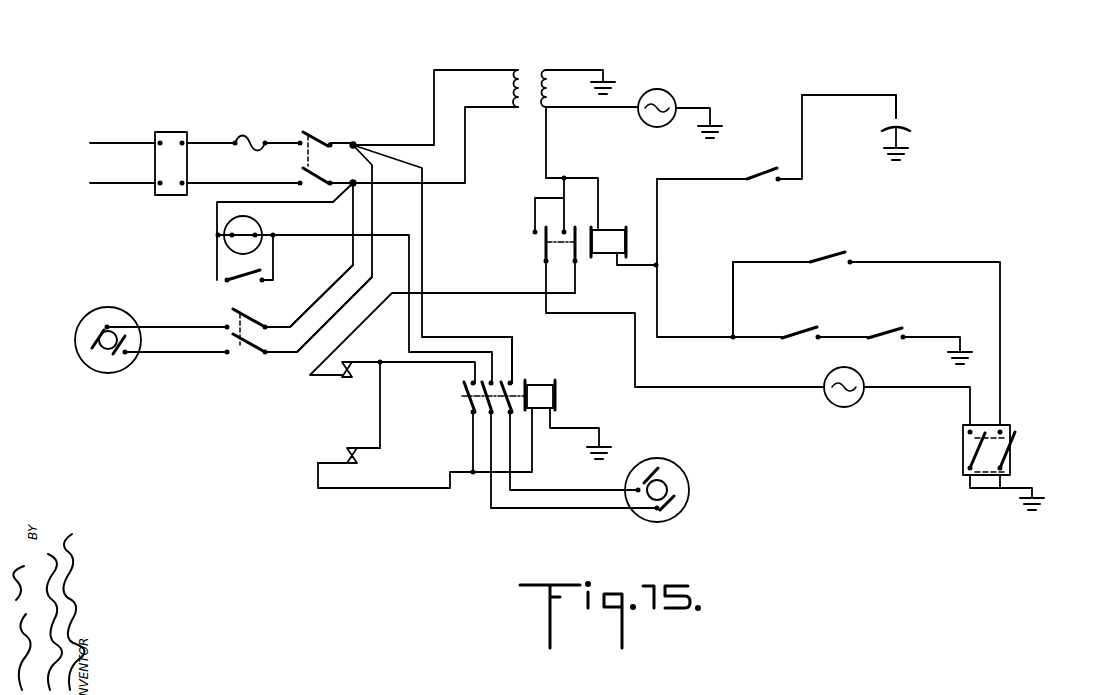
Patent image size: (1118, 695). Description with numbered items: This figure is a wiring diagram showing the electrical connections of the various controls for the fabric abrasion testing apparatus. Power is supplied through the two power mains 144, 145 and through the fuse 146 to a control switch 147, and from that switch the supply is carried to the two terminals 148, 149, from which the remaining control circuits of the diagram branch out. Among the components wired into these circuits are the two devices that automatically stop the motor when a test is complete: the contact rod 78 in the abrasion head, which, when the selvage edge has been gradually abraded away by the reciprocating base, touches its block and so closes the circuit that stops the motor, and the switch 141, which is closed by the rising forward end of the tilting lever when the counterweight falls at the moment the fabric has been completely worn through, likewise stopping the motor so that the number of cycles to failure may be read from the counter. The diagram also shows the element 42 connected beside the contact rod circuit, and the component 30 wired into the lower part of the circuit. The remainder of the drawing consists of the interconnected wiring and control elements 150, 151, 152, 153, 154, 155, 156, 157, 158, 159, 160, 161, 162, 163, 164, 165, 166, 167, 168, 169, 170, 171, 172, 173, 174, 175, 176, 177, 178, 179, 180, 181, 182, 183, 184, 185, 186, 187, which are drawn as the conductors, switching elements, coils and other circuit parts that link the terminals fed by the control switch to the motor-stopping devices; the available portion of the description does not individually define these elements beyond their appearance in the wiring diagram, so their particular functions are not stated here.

The motor 30 is at (692, 484).
The capacitor 42 is at (908, 136).
The contact rod 78 is at (896, 100).
The switch 141 is at (800, 322).
The power main 144 is at (204, 142).
The power main 145 is at (177, 196).
The fuse 146 is at (260, 141).
The control switch 147 is at (311, 128).
The terminal 148 is at (355, 142).
The terminal 149 is at (356, 186).
The conductors 150 is at (324, 294).
The conductor 151 is at (280, 354).
The double pole switch 152 is at (236, 358).
The motor 153 is at (116, 318).
The conductor 154 is at (411, 160).
The conductor 155 is at (512, 372).
The relay coil 156 is at (556, 394).
The conductor 157 is at (299, 234).
The relay contacts 158 is at (472, 414).
The switch 159 is at (246, 282).
The conductor 160 is at (267, 180).
The motor 161 is at (220, 212).
The conductor 162 is at (452, 70).
The conductor 163 is at (472, 124).
The transformer primary 164 is at (518, 68).
The transformer secondary 165 is at (550, 68).
The ground 166 is at (610, 80).
The conductor 167 is at (600, 110).
The lamp 168 is at (670, 96).
The conductor 169 is at (548, 150).
The relay coil 170 is at (606, 224).
The conductor 171 is at (640, 264).
The conductor 172 is at (678, 178).
The switch 173 is at (768, 172).
The relay contacts 174 is at (576, 262).
The conductor 175 is at (450, 292).
The connector 176 is at (344, 380).
The conductor 177 is at (380, 422).
The connector 178 is at (338, 458).
The conductor 179 is at (367, 490).
The relay contact 180 is at (466, 394).
The junction 181 is at (380, 359).
The conductor 182 is at (658, 298).
The conductor 183 is at (764, 262).
The switch 184 is at (836, 252).
The relay 185 is at (1012, 456).
The switch 186 is at (888, 326).
The conductor 187 is at (750, 336).